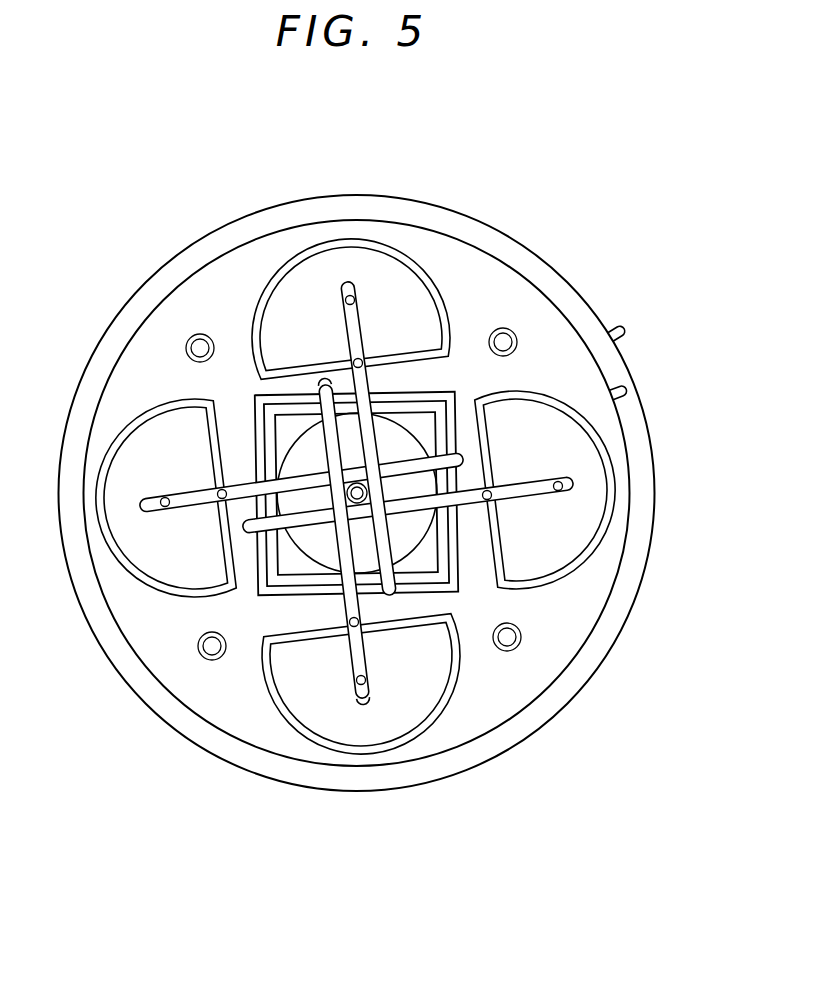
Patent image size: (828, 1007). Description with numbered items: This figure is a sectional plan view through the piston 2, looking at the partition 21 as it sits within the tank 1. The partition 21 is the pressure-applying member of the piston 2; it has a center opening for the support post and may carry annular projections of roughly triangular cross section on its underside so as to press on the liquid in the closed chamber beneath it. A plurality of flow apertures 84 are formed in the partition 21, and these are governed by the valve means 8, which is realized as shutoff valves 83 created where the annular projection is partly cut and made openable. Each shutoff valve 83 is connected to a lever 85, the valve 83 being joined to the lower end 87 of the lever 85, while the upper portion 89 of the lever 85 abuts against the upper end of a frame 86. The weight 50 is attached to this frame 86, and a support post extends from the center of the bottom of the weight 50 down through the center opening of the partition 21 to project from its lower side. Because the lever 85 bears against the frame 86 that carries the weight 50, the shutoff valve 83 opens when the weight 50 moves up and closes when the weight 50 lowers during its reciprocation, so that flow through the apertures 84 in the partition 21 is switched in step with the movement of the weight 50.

The tank 1 is at (609, 337).
The piston 2 is at (610, 395).
The valve means 8 is at (373, 663).
The partition 21 is at (560, 635).
The weight 50 is at (307, 538).
The shutoff valve 83 is at (412, 325).
The flow aperture 84 is at (418, 268).
The lever 85 is at (350, 597).
The frame 86 is at (456, 395).
The lower end 87 is at (353, 692).
The upper portion 89 is at (325, 380).